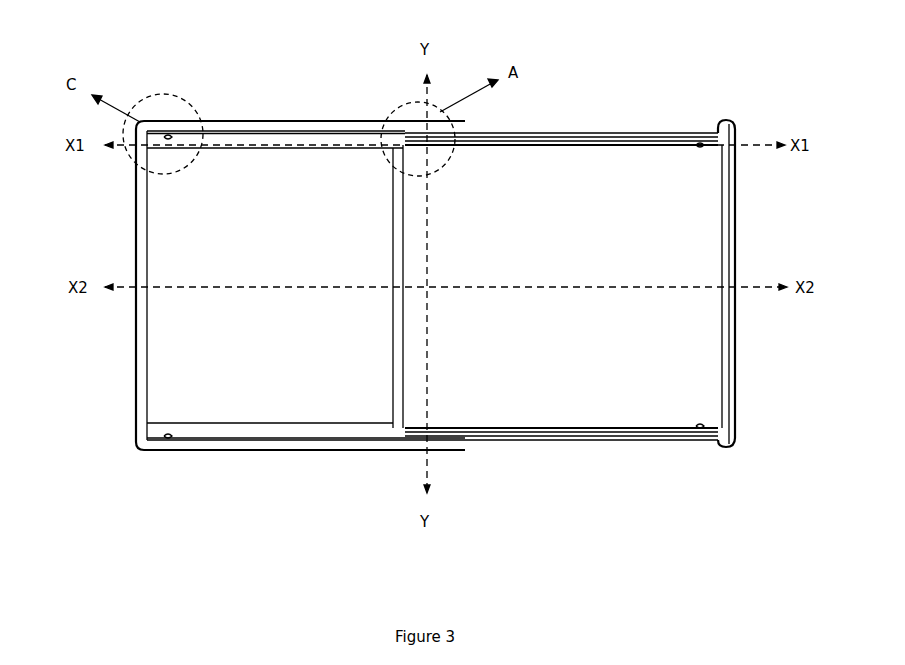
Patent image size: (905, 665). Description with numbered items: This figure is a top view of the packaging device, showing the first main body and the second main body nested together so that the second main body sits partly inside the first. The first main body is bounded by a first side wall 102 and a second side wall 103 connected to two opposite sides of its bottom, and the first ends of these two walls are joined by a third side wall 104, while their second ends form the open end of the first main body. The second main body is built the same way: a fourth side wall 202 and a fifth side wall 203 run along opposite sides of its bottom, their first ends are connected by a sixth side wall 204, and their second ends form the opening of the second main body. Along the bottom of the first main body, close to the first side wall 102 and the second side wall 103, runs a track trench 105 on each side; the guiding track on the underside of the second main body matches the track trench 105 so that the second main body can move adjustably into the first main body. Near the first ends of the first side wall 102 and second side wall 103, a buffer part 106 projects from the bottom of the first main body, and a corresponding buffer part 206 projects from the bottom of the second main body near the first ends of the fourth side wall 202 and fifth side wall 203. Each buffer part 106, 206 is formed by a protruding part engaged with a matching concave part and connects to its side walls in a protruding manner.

The first side wall 102 is at (293, 129).
The second side wall 103 is at (310, 439).
The third side wall 104 is at (136, 230).
The track trench 105 is at (345, 148).
The buffer part 106 is at (168, 137).
The fourth side wall 202 is at (588, 133).
The fifth side wall 203 is at (590, 430).
The sixth side wall 204 is at (737, 210).
The buffer part 206 is at (700, 144).